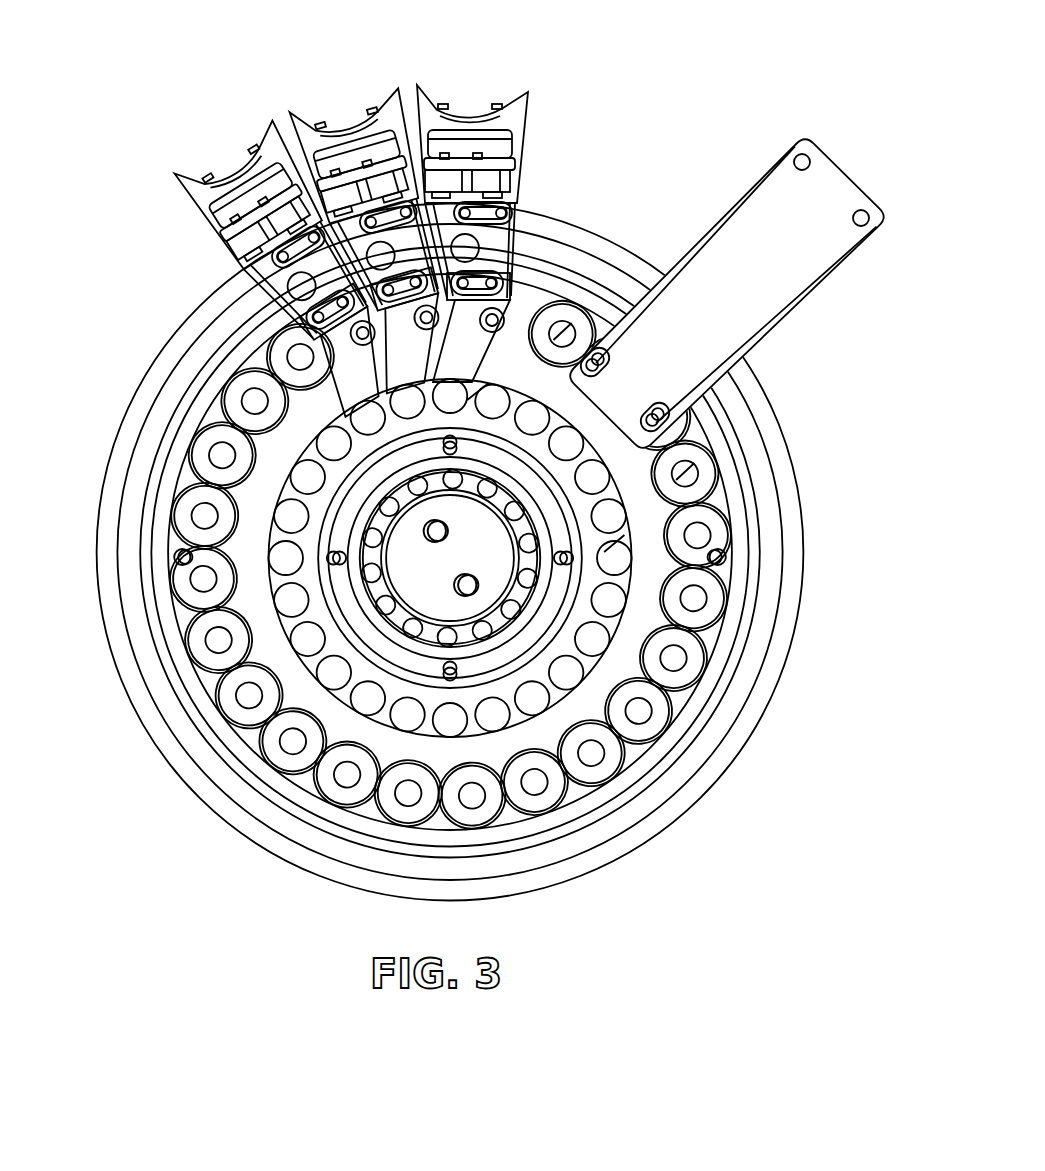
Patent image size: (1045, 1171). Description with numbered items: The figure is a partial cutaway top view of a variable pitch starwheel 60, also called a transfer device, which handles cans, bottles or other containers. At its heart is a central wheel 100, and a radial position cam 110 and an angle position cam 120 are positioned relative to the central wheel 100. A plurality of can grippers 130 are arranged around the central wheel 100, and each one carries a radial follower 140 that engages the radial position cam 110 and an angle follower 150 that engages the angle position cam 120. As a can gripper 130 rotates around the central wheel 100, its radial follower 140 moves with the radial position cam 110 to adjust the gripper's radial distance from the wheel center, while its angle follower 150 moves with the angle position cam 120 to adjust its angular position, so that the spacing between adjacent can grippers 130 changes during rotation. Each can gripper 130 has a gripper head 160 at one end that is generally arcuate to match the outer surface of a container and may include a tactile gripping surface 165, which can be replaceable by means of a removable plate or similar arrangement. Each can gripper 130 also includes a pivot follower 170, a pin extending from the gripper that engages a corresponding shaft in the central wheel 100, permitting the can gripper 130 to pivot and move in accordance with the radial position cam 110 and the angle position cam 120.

The starwheel 60 is at (476, 463).
The central wheel 100 is at (640, 520).
The radial position cam 110 is at (267, 797).
The angle position cam 120 is at (598, 632).
The can gripper 130 is at (497, 229).
The radial follower 140 is at (302, 288).
The angle follower 150 is at (365, 430).
The gripper head 160 is at (514, 131).
The tactile gripping surface 165 is at (478, 104).
The pivot follower 170 is at (494, 321).